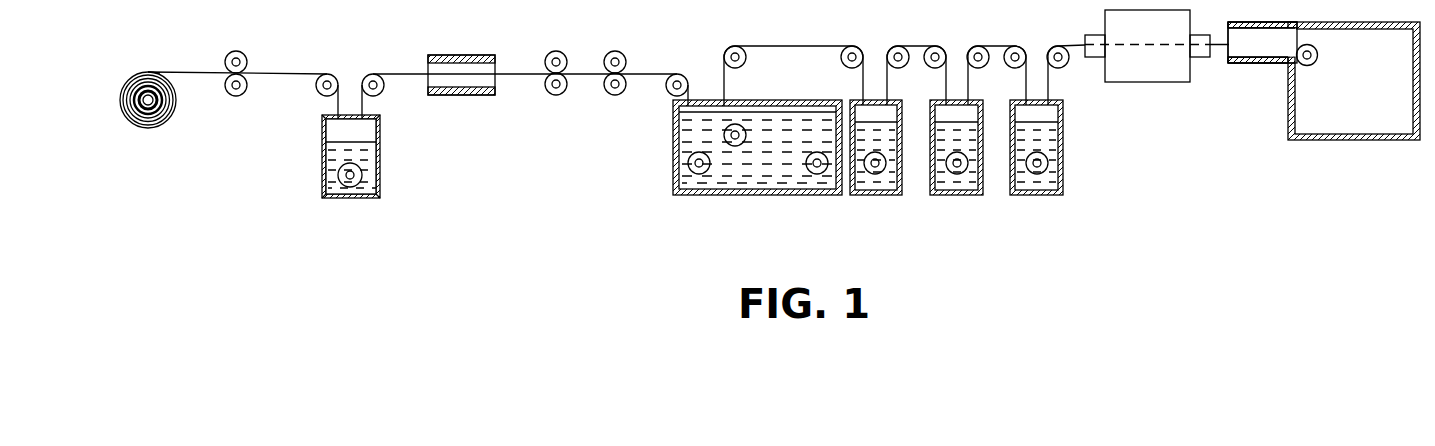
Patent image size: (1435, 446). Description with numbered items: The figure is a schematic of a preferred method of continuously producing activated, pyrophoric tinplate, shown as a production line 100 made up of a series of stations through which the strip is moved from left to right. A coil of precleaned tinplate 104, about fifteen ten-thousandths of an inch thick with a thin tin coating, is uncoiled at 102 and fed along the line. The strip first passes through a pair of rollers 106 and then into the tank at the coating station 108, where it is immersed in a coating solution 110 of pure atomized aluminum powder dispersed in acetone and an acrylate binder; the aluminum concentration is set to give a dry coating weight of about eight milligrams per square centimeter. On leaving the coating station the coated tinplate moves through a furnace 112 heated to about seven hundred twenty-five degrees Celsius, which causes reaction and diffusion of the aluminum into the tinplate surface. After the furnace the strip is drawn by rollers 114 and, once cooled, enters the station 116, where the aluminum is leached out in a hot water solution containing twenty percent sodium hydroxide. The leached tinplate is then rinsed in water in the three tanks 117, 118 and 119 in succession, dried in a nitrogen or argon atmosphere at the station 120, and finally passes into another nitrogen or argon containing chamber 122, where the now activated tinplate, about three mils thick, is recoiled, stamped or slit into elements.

The production line 100 is at (690, 204).
The uncoiling station 102 is at (147, 128).
The tinplate 104 is at (160, 59).
The straightening rollers 106 is at (246, 57).
The coating station 108 is at (318, 159).
The coating solution 110 is at (338, 160).
The furnace 112 is at (453, 95).
The feed rollers 114 is at (585, 88).
The leaching station 116 is at (758, 183).
The rinse tank 117 is at (873, 183).
The rinse tank 118 is at (957, 183).
The rinse tank 119 is at (1037, 183).
The drying station 120 is at (1143, 68).
The stamping or slitting chamber 122 is at (1308, 125).